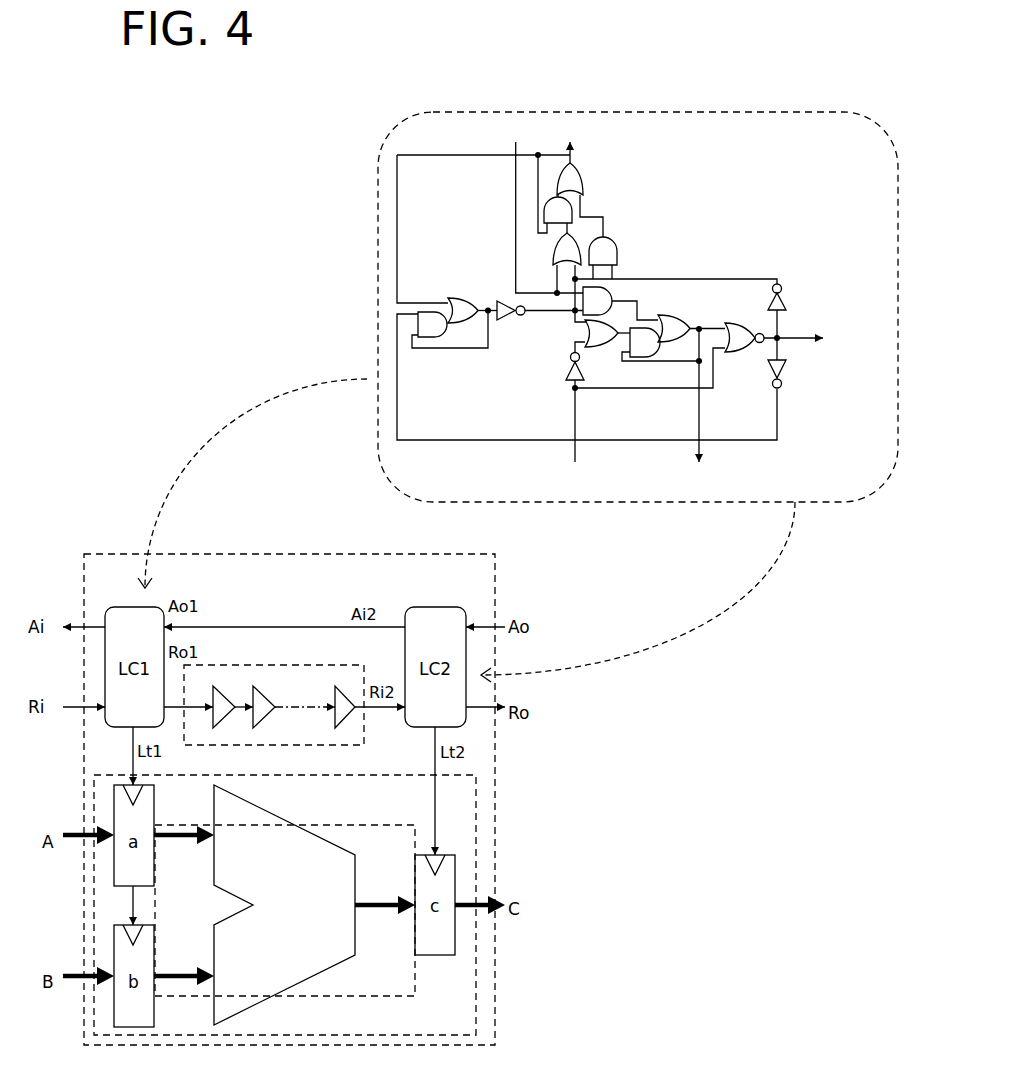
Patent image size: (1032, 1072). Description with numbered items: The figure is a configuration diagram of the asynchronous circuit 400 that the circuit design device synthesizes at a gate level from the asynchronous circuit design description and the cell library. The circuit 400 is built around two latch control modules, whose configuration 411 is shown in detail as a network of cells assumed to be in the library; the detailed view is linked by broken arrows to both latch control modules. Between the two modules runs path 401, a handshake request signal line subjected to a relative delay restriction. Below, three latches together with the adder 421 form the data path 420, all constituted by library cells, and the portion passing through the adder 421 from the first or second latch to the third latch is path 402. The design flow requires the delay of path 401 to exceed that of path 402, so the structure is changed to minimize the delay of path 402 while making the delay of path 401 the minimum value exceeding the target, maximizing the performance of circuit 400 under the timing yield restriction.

The circuit 400 is at (496, 976).
The path 401 is at (366, 737).
The path 402 is at (366, 826).
The configuration 411 is at (378, 317).
The data path 420 is at (476, 1019).
The adder 421 is at (357, 873).